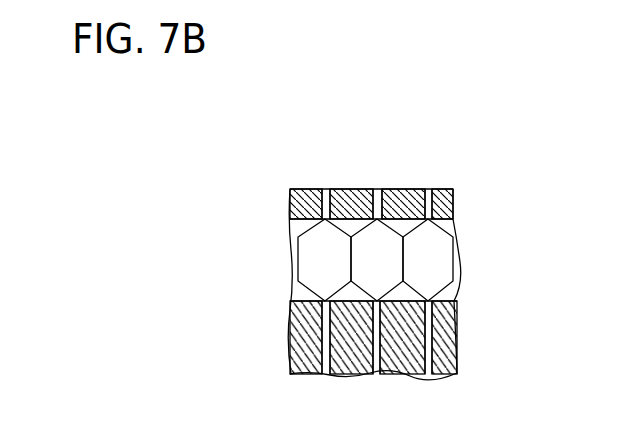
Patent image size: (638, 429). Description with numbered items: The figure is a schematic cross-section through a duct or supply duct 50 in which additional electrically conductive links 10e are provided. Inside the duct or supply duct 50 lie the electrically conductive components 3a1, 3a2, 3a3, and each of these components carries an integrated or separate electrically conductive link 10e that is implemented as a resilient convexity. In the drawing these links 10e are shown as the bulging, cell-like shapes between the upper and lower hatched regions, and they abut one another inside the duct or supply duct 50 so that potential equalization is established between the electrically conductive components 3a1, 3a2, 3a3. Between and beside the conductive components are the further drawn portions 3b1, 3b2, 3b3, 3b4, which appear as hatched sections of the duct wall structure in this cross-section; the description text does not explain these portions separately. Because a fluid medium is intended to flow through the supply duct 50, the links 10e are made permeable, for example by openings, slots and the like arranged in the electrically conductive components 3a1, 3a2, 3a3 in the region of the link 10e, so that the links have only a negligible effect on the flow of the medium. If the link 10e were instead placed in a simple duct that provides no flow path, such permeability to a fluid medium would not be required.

The electrically conductive component 3a1 is at (326, 189).
The electrically conductive component 3a2 is at (377, 189).
The electrically conductive component 3a3 is at (428, 189).
The first protrusion 3b1 is at (303, 189).
The second protrusion 3b2 is at (342, 189).
The third protrusion 3b3 is at (405, 189).
The fourth protrusion 3b4 is at (445, 189).
The electrically conductive link 10e is at (455, 250).
The duct or supply duct 50 is at (454, 292).